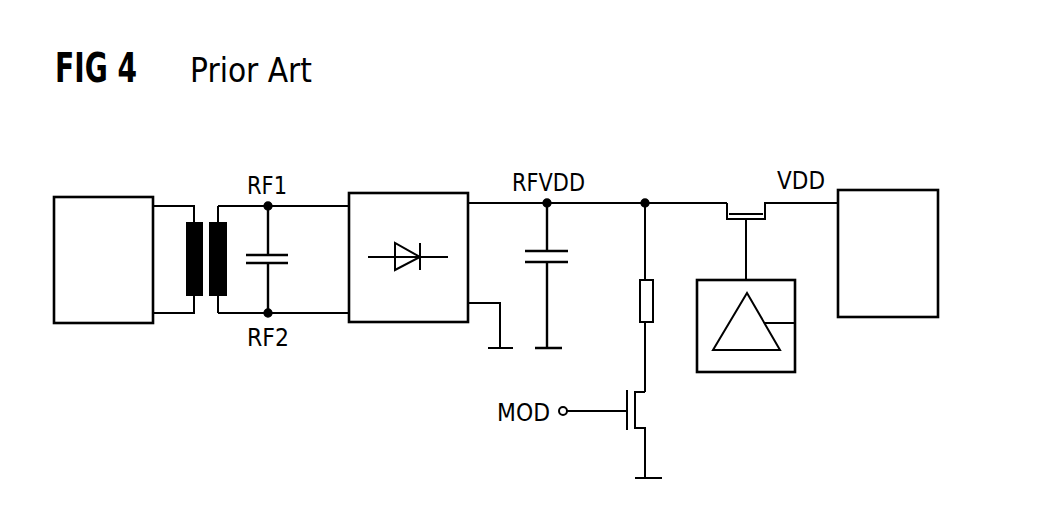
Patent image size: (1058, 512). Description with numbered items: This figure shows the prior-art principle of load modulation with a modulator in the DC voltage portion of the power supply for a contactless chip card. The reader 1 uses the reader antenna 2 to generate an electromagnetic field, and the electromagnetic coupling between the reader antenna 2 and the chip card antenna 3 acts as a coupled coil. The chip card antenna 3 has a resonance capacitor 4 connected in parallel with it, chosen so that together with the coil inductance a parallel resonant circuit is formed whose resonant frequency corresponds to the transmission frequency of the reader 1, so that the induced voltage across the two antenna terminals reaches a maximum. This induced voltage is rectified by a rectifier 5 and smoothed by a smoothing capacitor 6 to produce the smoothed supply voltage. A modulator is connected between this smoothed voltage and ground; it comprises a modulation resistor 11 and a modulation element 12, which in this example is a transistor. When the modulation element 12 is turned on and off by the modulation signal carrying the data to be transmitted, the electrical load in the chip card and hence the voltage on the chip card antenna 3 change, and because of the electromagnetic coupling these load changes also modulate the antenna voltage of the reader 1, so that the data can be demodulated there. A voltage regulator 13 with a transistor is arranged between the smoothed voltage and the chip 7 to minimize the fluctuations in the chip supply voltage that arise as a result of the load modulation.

The reader 1 is at (103, 197).
The reader antenna 2 is at (191, 234).
The chip card antenna 3 is at (220, 234).
The resonance capacitor 4 is at (288, 262).
The rectifier 5 is at (398, 193).
The smoothing capacitor 6 is at (568, 258).
The chip 7 is at (885, 190).
The modulation resistor 11 is at (638, 298).
The modulation element 12 is at (640, 407).
The voltage regulator 13 is at (747, 372).